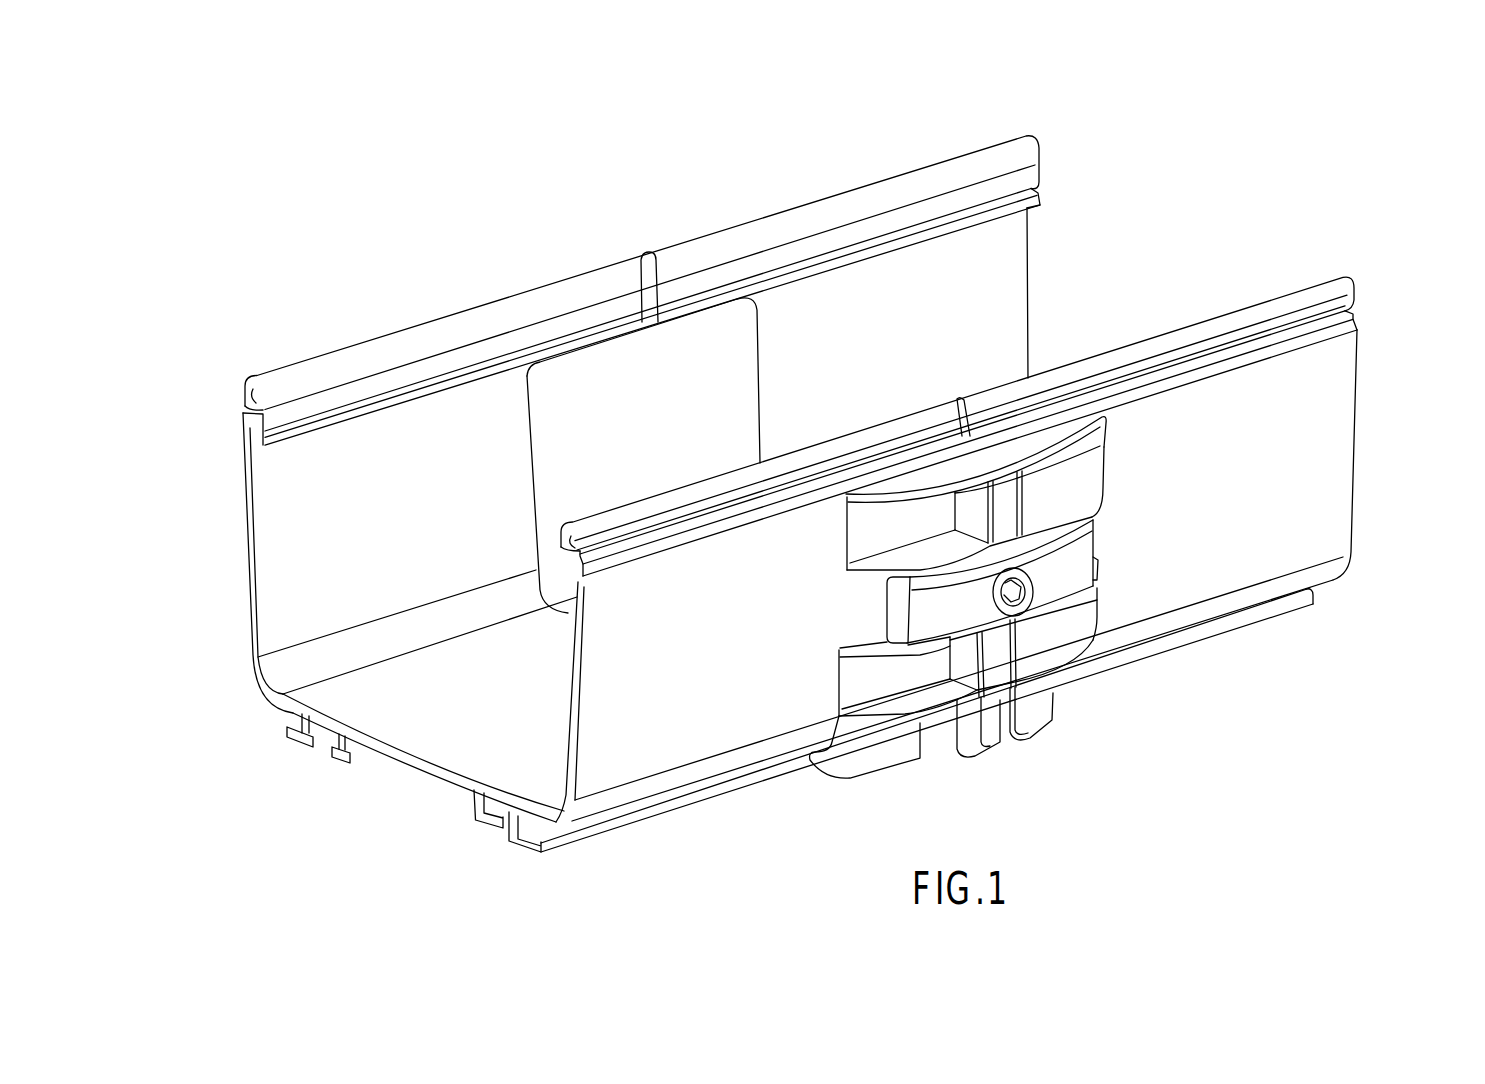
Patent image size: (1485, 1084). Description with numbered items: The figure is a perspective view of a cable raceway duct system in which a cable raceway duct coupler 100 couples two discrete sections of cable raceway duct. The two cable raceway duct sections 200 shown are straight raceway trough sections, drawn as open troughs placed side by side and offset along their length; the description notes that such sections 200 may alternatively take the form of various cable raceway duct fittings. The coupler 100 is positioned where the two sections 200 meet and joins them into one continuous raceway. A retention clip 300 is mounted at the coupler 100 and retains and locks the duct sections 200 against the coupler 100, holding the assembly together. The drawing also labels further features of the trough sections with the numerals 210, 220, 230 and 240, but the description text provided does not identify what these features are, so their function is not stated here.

The cable raceway duct coupler 100 is at (1046, 722).
The cable raceway duct sections 200 is at (805, 514).
The side wall 210 is at (350, 513).
The bottom wall 220 is at (488, 741).
The top rail 230 is at (400, 350).
The foot clips 240 is at (300, 743).
The retention clip 300 is at (1075, 561).